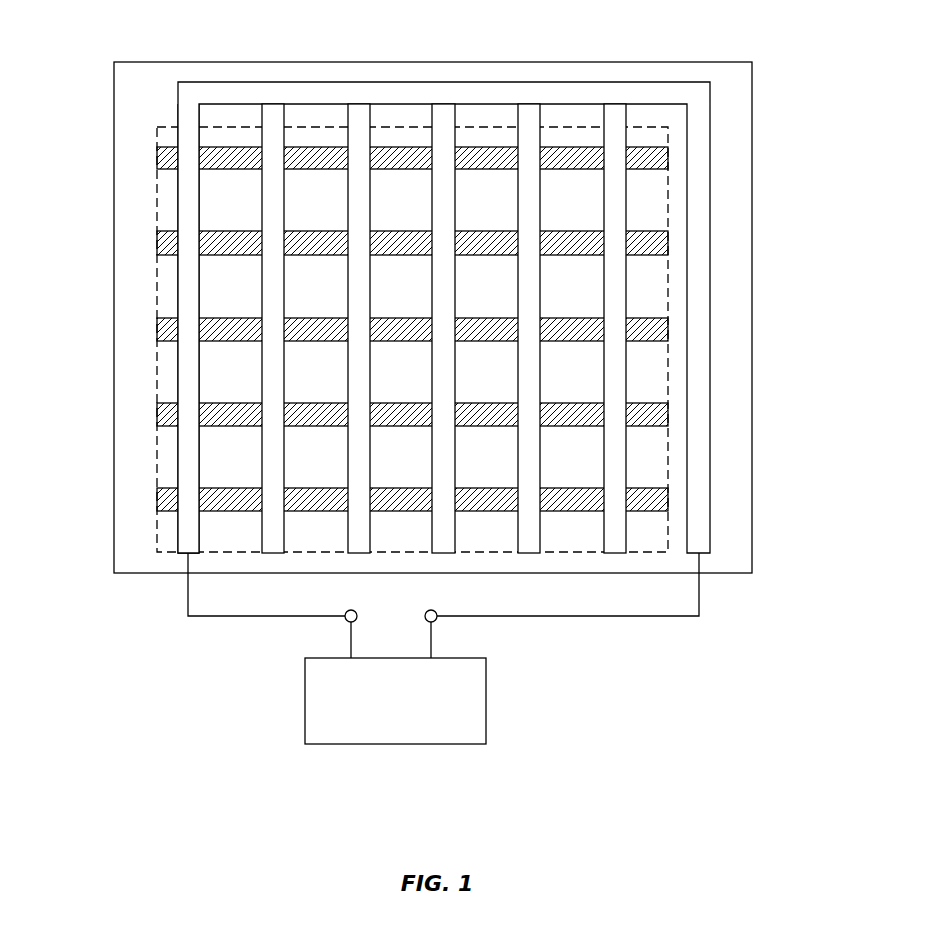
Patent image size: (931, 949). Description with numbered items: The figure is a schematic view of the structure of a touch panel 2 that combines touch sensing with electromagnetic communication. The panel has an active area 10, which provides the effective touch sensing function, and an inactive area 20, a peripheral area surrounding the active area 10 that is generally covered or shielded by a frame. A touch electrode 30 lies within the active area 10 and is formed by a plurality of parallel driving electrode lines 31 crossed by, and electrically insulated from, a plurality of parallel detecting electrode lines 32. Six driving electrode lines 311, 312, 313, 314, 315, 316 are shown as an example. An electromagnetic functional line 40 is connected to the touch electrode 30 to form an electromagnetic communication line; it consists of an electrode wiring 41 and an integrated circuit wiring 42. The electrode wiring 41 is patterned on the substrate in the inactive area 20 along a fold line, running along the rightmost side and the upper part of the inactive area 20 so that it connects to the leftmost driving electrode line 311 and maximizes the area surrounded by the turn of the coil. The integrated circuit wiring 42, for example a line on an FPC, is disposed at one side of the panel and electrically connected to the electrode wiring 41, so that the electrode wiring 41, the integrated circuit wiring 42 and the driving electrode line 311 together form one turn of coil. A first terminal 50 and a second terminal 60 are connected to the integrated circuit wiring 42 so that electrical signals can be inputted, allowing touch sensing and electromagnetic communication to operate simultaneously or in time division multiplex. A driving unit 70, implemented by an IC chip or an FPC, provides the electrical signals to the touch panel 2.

The touch display device 2 is at (443, 424).
The active area 10 is at (167, 464).
The inactive area 20 is at (145, 413).
The touch electrode 30 is at (57, 195).
The driving electrode lines 31 is at (459, 324).
The detecting electrode lines 32 is at (163, 246).
The driving electrode line 311 is at (188, 147).
The driving electrode line 312 is at (273, 147).
The driving electrode line 313 is at (358, 147).
The driving electrode line 314 is at (448, 147).
The driving electrode line 315 is at (534, 147).
The driving electrode line 316 is at (619, 147).
The electromagnetic functional line 40 is at (520, 349).
The electrode wiring 41 is at (700, 528).
The integrated circuit wiring 42 is at (700, 600).
The first terminal 50 is at (346, 620).
The second terminal 60 is at (437, 620).
The driving unit 70 is at (432, 713).